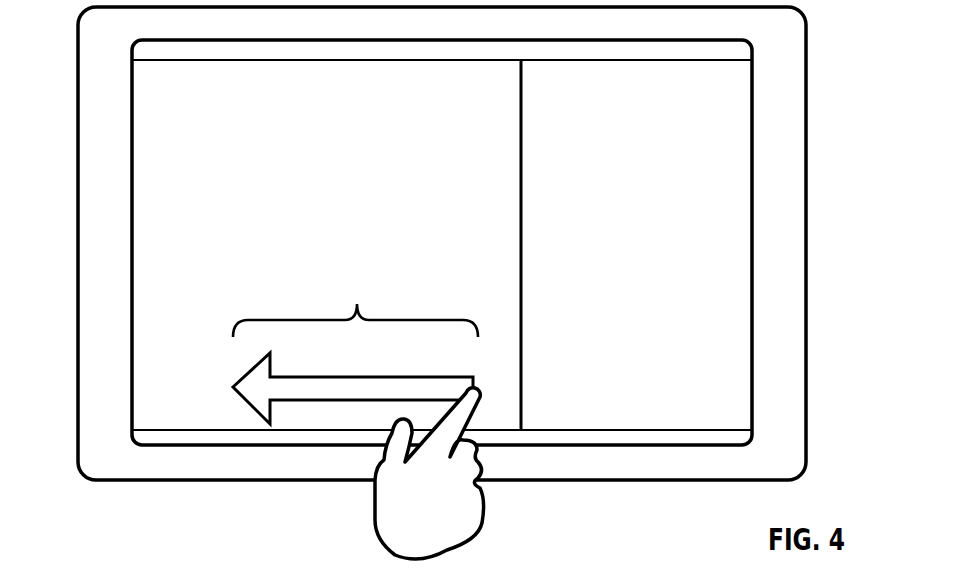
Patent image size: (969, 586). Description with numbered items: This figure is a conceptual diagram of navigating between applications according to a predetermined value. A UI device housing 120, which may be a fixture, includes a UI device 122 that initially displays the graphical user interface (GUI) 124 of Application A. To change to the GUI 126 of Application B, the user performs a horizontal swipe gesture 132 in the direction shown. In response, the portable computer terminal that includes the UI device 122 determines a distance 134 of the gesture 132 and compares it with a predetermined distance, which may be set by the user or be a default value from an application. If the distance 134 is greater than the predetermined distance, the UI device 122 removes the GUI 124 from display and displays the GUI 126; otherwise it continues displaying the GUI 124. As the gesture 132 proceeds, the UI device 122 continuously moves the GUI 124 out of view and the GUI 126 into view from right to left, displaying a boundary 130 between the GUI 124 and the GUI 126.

The UI device housing 120 is at (78, 77).
The UI device 122 is at (132, 122).
The graphical user interface (GUI) of Application A 124 is at (322, 224).
The graphical user interface (GUI) of Application B 126 is at (662, 282).
The boundary 130 is at (521, 213).
The horizontal swipe gesture 132 is at (392, 375).
The distance of gesture 134 is at (355, 308).